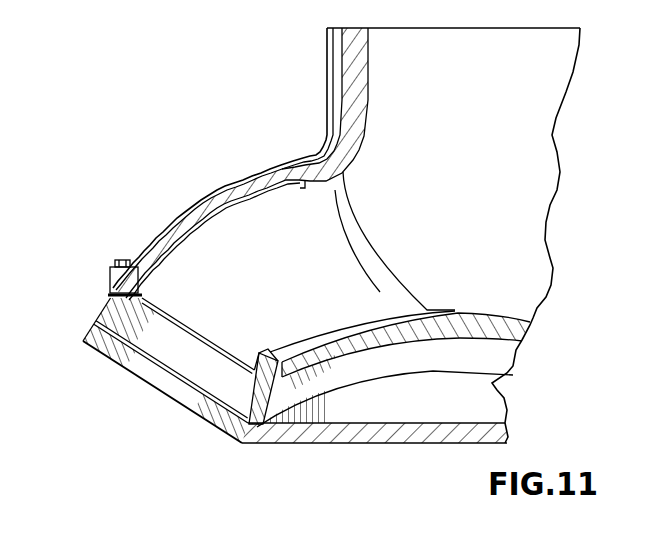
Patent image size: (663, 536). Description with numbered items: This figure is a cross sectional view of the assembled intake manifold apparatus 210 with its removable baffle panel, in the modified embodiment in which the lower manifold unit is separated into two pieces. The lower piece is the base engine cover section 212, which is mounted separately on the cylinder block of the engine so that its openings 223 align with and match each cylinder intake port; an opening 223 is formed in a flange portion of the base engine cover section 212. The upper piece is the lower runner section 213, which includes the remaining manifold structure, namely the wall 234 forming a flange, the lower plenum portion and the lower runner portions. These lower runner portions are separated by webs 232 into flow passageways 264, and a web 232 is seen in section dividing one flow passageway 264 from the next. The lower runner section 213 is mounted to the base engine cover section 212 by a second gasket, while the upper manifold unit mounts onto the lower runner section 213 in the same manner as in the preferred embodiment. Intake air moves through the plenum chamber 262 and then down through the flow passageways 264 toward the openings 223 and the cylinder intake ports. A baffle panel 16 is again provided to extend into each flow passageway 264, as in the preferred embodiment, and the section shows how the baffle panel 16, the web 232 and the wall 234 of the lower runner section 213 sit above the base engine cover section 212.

The intake manifold apparatus 210 is at (203, 139).
The plenum chamber 262 is at (475, 177).
The baffle panel 16 is at (277, 291).
The wall 234 is at (110, 298).
The opening 223 is at (158, 382).
The web 232 is at (205, 378).
The flow passageway 264 is at (207, 362).
The lower runner section 213 is at (503, 353).
The base engine cover section 212 is at (355, 438).